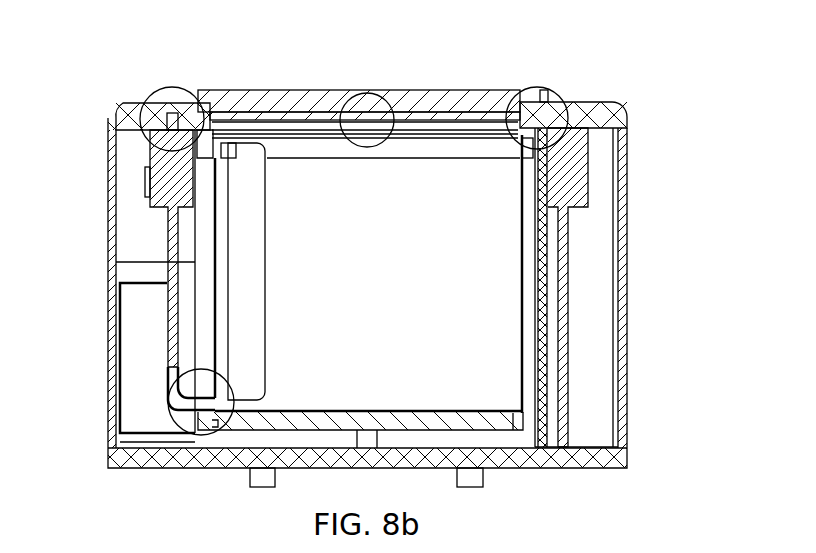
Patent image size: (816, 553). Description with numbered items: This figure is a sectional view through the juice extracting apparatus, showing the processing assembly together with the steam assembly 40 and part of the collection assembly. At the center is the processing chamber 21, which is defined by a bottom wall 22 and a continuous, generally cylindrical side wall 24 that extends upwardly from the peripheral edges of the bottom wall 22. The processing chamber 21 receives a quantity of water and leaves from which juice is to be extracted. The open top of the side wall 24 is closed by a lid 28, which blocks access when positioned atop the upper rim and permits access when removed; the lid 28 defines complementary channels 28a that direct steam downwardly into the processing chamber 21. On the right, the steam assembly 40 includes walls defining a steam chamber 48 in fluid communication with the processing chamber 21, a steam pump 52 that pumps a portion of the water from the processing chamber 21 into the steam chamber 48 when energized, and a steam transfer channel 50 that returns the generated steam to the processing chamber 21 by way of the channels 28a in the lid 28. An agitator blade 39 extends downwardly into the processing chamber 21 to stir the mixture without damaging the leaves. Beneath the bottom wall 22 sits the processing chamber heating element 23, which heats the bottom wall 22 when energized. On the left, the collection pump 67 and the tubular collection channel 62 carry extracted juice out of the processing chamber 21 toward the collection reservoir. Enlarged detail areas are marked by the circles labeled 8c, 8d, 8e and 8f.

The steam assembly 40 is at (642, 256).
The lid 28 is at (250, 98).
The complementary channels 28a is at (362, 122).
The detail circle 8f is at (380, 97).
The detail circle 8d is at (145, 98).
The detail circle 8e is at (577, 93).
The detail circle 8c is at (172, 392).
The steam transfer channel 50 is at (538, 98).
The collection pump 67 is at (167, 163).
The steam pump 52 is at (573, 178).
The steam chamber 48 is at (593, 348).
The processing chamber 21 is at (421, 224).
The side wall 24 is at (518, 293).
The agitator blade 39 is at (245, 250).
The bottom wall 22 is at (375, 410).
The processing chamber heating element 23 is at (310, 422).
The collection channel 62 is at (175, 400).